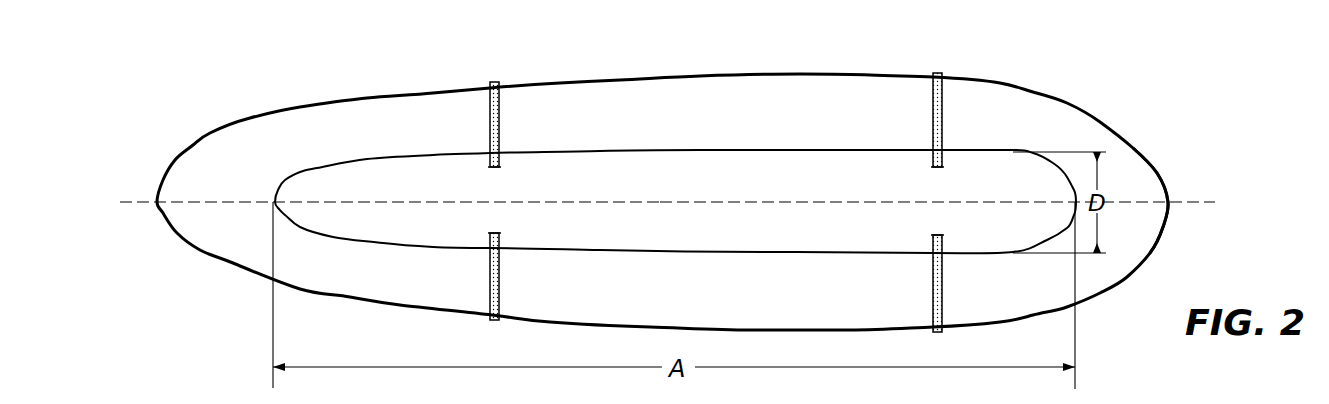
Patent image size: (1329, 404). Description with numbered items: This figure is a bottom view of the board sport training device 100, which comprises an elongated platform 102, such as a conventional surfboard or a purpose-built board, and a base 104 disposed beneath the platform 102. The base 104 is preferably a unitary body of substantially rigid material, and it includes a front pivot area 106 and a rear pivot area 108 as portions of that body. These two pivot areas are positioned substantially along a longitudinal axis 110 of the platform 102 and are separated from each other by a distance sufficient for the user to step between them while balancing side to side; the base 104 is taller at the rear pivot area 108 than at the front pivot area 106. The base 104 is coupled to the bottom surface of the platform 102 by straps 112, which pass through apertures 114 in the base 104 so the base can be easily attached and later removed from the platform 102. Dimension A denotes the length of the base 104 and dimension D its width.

The board sport training device 100 is at (331, 94).
The elongated platform 102 is at (736, 75).
The base 104 is at (686, 149).
The front pivot area 106 is at (963, 212).
The rear pivot area 108 is at (518, 211).
The longitudinal axis 110 is at (1187, 199).
The straps 112 is at (500, 104).
The apertures 114 is at (500, 170).